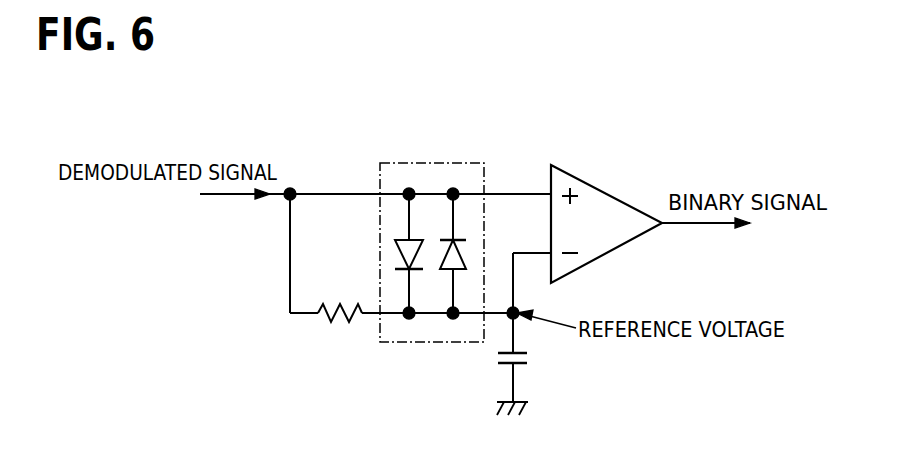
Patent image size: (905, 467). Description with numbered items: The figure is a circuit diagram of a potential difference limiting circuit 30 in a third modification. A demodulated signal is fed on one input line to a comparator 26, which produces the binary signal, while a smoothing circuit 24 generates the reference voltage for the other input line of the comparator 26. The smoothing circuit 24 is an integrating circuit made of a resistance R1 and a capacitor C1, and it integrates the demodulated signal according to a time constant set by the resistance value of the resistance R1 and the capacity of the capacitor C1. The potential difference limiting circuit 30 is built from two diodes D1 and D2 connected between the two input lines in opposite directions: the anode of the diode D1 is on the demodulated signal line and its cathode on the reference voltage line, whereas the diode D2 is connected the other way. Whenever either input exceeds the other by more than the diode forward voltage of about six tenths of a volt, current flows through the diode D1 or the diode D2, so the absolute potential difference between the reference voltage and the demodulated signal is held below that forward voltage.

The potential difference limiting circuit 30 is at (428, 226).
The comparator 26 is at (610, 202).
The smoothing circuit 24 is at (423, 374).
The diode D1 is at (398, 256).
The diode D2 is at (466, 256).
The resistance R1 is at (345, 330).
The capacitor C1 is at (497, 356).